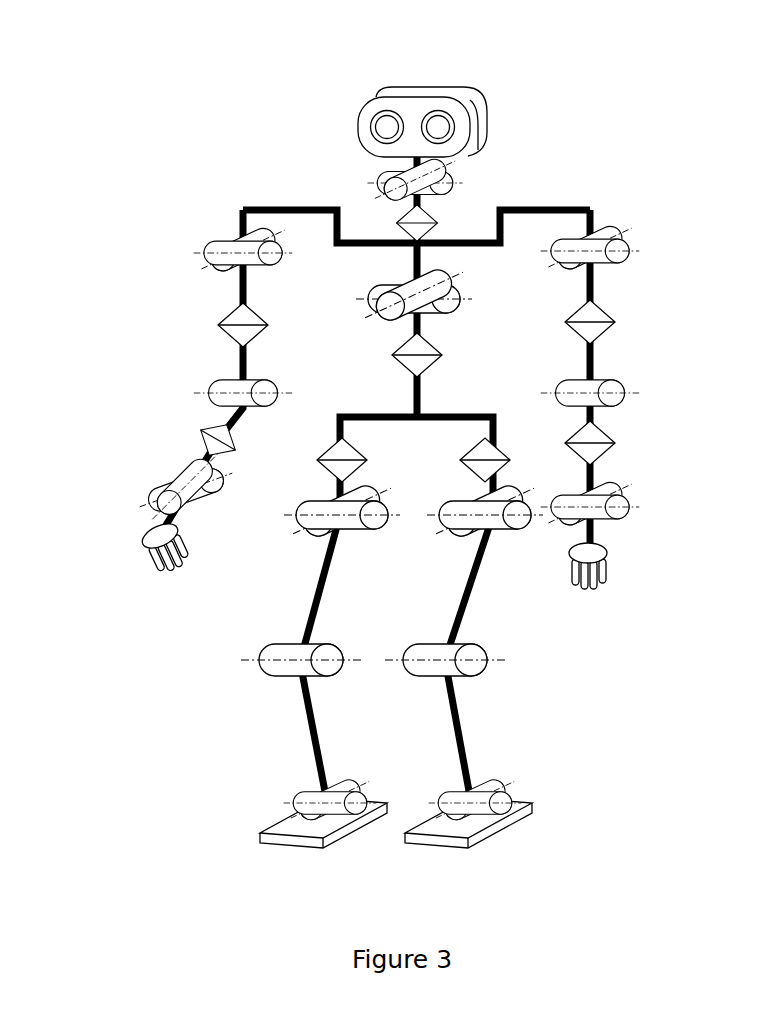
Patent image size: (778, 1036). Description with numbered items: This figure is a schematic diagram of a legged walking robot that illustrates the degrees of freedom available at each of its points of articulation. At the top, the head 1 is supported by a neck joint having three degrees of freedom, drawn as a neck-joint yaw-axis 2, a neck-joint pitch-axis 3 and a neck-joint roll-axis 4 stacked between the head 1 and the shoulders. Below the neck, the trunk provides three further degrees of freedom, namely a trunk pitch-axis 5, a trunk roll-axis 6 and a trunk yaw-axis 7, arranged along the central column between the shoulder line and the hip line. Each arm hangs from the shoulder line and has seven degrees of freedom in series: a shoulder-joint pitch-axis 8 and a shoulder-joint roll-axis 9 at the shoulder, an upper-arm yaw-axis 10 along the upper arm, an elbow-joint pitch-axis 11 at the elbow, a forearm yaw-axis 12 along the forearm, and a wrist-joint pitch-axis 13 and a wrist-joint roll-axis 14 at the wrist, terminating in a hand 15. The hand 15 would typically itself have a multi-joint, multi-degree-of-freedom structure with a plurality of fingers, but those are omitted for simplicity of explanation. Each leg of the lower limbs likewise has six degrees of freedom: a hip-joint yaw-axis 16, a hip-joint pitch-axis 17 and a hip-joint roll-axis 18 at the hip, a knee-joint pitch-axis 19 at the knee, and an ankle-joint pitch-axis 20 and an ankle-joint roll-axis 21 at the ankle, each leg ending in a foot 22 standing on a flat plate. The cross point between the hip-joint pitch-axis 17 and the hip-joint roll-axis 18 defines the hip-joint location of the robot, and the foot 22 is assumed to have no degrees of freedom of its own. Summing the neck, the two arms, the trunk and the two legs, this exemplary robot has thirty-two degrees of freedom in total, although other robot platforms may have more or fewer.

The head 1 is at (458, 95).
The neck-joint yaw-axis 2 is at (438, 226).
The neck-joint pitch-axis 3 is at (447, 192).
The neck-joint roll-axis 4 is at (448, 166).
The trunk pitch-axis 5 is at (455, 302).
The trunk roll-axis 6 is at (454, 286).
The trunk yaw-axis 7 is at (445, 352).
The shoulder-joint pitch-axis 8 is at (208, 246).
The shoulder-joint roll-axis 9 is at (213, 263).
The upper-arm yaw-axis 10 is at (225, 311).
The elbow-joint pitch-axis 11 is at (225, 386).
The forearm yaw-axis 12 is at (203, 446).
The wrist-joint pitch-axis 13 is at (163, 470).
The wrist-joint roll-axis 14 is at (154, 489).
The hand 15 is at (142, 536).
The hip-joint yaw-axis 16 is at (502, 462).
The hip-joint pitch-axis 17 is at (514, 522).
The hip-joint roll-axis 18 is at (452, 532).
The knee-joint pitch-axis 19 is at (478, 669).
The ankle-joint pitch-axis 20 is at (511, 815).
The ankle-joint roll-axis 21 is at (500, 784).
The foot 22 is at (292, 830).